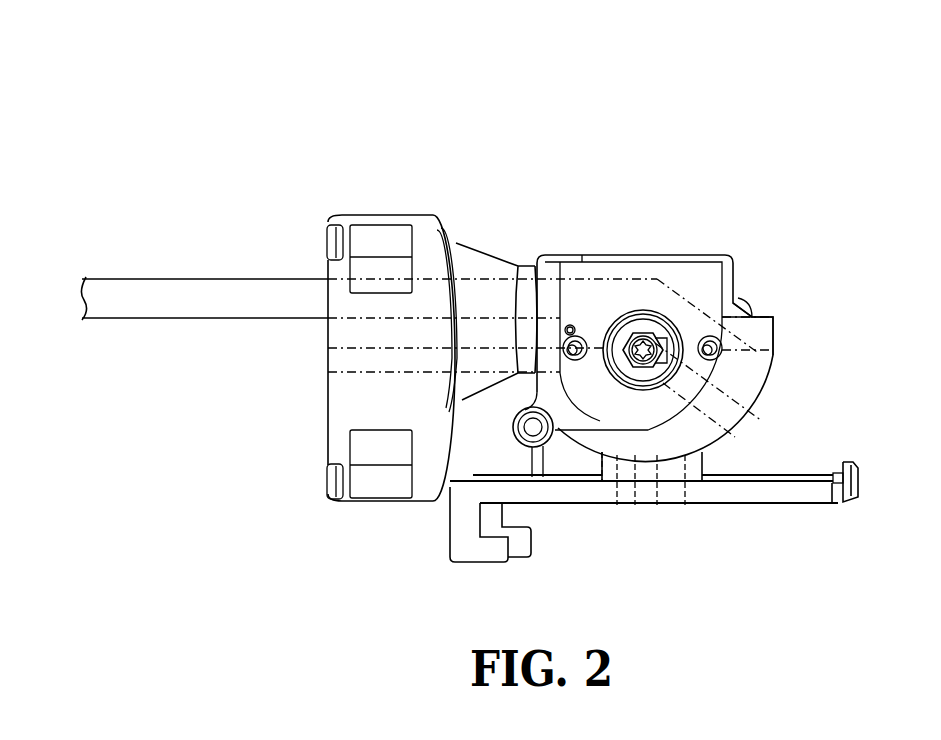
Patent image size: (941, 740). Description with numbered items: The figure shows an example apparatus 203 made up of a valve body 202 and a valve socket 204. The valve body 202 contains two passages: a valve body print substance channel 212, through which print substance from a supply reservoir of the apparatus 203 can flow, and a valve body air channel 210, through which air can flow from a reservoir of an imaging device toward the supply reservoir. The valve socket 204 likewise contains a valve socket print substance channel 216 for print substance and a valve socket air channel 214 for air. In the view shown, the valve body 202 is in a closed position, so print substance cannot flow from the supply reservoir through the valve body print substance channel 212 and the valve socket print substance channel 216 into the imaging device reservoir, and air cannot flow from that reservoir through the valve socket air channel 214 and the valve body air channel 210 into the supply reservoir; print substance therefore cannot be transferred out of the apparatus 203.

The apparatus 203 is at (300, 108).
The valve body 202 is at (492, 265).
The valve socket 204 is at (766, 327).
The valve body air channel 210 is at (755, 381).
The valve body print substance channel 212 is at (725, 428).
The valve socket air channel 214 is at (673, 497).
The valve socket print substance channel 216 is at (625, 497).